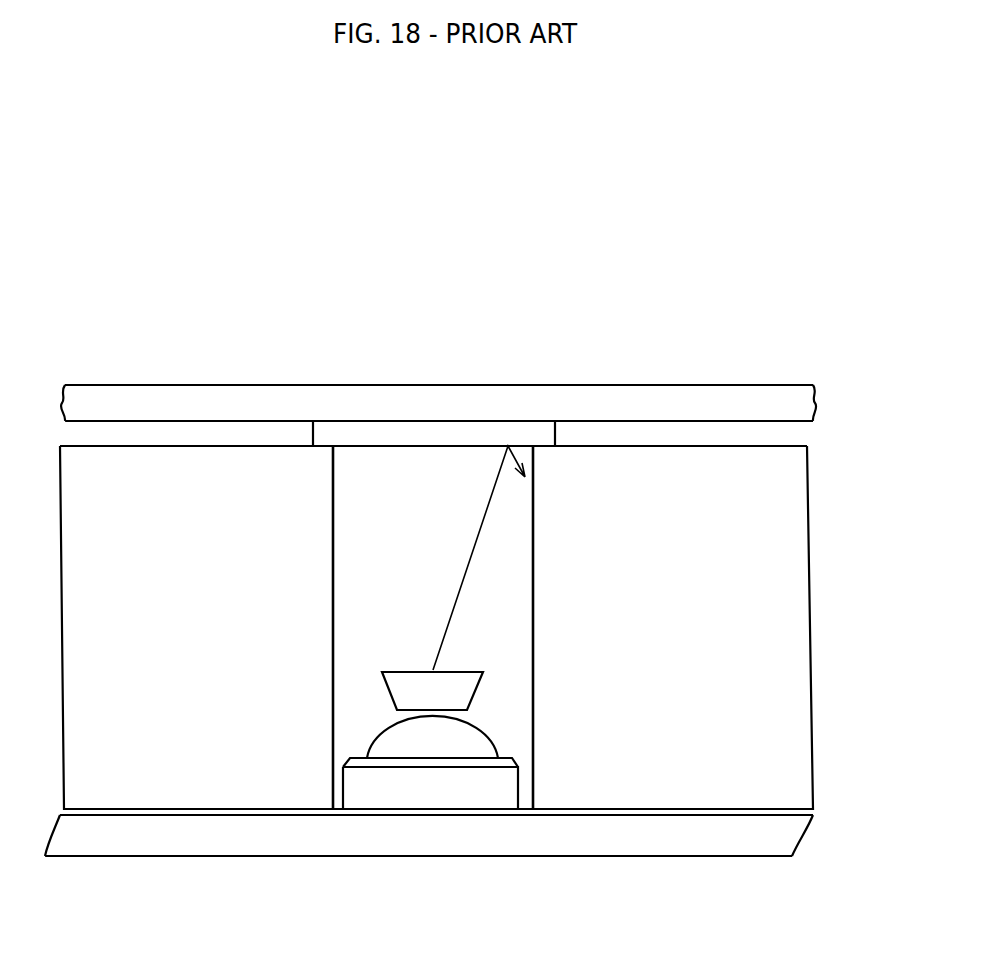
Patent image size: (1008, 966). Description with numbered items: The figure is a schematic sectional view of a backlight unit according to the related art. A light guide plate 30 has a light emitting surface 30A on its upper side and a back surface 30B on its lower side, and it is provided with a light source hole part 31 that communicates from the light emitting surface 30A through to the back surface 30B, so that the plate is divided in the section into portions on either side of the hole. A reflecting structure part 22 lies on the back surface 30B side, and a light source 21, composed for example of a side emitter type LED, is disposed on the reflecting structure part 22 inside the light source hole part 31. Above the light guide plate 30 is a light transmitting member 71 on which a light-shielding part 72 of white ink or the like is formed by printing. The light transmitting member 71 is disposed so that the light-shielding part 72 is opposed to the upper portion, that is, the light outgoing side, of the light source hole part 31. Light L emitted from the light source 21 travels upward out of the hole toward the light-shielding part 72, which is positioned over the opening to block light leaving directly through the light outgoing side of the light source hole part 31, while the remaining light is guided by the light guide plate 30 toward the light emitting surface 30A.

The light transmitting member 71 is at (710, 410).
The light-shielding part 72 is at (482, 440).
The light guide plate 30 is at (768, 545).
The light emitting surface 30A is at (143, 424).
The back surface 30B is at (132, 832).
The light source hole part 31 is at (333, 672).
The reflecting structure part 22 is at (658, 825).
The light source 21 is at (439, 728).
The light L is at (475, 540).